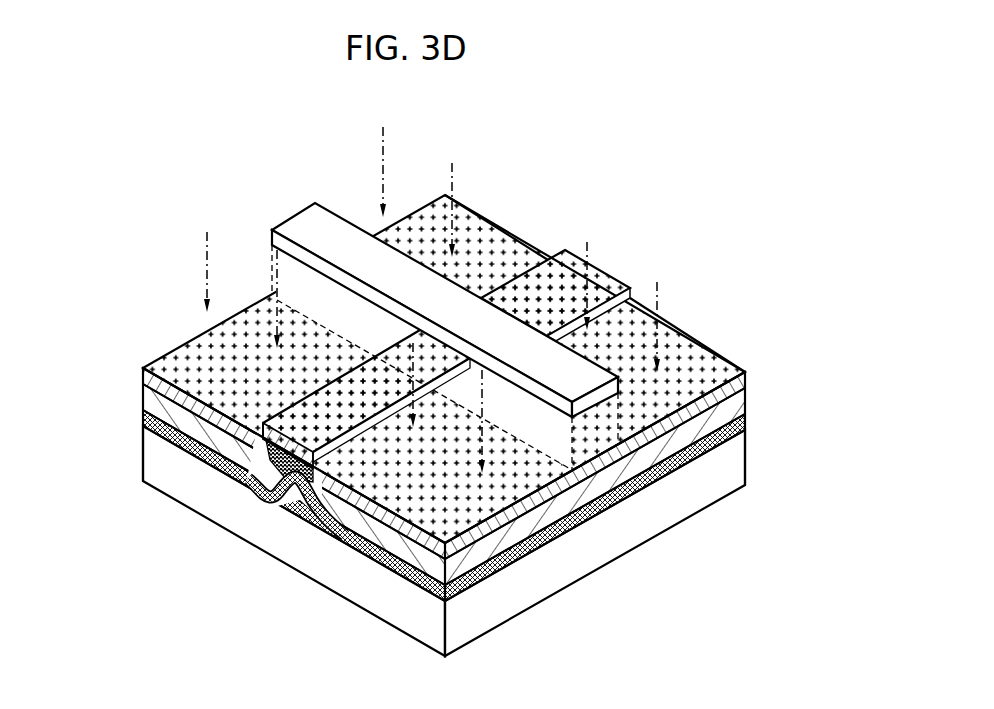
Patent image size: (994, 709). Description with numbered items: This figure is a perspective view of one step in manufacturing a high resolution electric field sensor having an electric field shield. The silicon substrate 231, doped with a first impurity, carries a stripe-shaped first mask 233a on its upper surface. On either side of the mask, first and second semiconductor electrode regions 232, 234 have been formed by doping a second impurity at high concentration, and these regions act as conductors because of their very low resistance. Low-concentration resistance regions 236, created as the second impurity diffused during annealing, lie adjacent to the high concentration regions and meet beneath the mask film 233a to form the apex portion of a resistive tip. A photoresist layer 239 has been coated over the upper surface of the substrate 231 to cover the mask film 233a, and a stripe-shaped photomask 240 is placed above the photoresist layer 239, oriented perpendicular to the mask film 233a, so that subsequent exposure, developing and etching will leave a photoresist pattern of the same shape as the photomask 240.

The silicon substrate 231 is at (338, 580).
The first semiconductor electrode region 232 is at (145, 398).
The first mask 233a is at (270, 468).
The second semiconductor electrode region 234 is at (415, 582).
The resistance regions 236 is at (300, 497).
The photoresist layer 239 is at (145, 377).
The photomask 240 is at (301, 226).